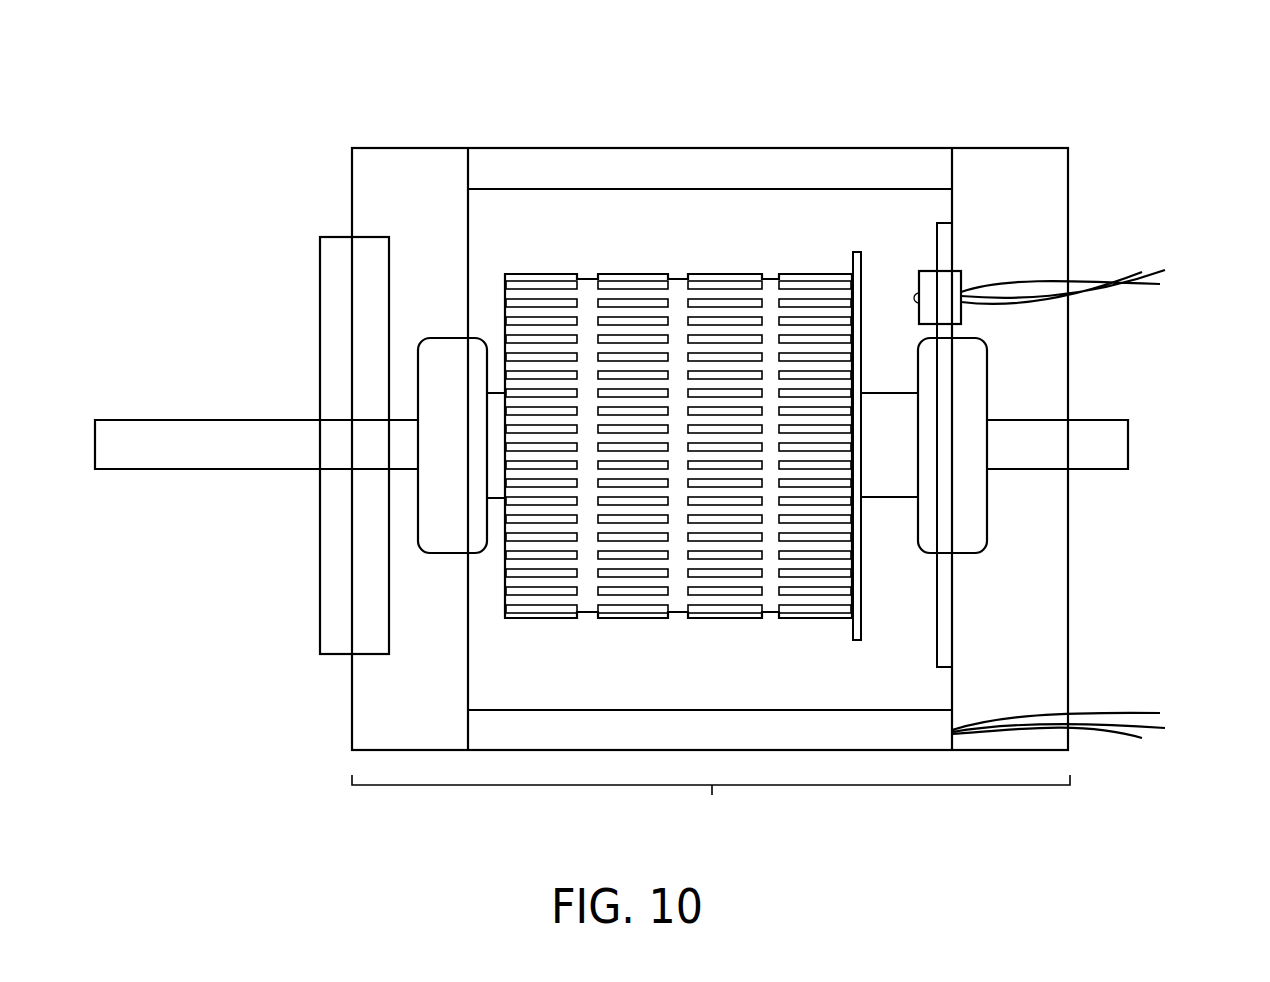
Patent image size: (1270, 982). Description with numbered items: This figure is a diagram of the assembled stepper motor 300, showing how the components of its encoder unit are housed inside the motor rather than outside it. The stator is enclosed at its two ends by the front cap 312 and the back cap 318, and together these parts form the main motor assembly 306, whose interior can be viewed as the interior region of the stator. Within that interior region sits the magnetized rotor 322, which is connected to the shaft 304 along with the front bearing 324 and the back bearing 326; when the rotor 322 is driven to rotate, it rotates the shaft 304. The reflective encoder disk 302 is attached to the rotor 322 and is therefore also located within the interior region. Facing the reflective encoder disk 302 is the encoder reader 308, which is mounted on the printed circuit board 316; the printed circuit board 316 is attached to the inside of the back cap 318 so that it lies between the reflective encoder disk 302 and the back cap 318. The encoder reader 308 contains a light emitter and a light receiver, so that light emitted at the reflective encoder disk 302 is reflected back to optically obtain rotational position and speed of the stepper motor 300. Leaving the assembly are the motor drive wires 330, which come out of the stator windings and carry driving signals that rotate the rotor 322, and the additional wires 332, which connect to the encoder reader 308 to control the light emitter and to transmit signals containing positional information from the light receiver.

The stepper motor 300 is at (930, 58).
The reflective encoder disk 302 is at (863, 265).
The shaft 304 is at (1128, 437).
The main motor assembly 306 is at (711, 803).
The encoder reader 308 is at (917, 318).
The front cap 312 is at (420, 148).
The printed circuit board 316 is at (937, 633).
The back cap 318 is at (1013, 148).
The rotor 322 is at (627, 273).
The front bearing 324 is at (453, 555).
The back bearing 326 is at (970, 555).
The motor drive wires 330 is at (1125, 718).
The wires 332 is at (1125, 275).